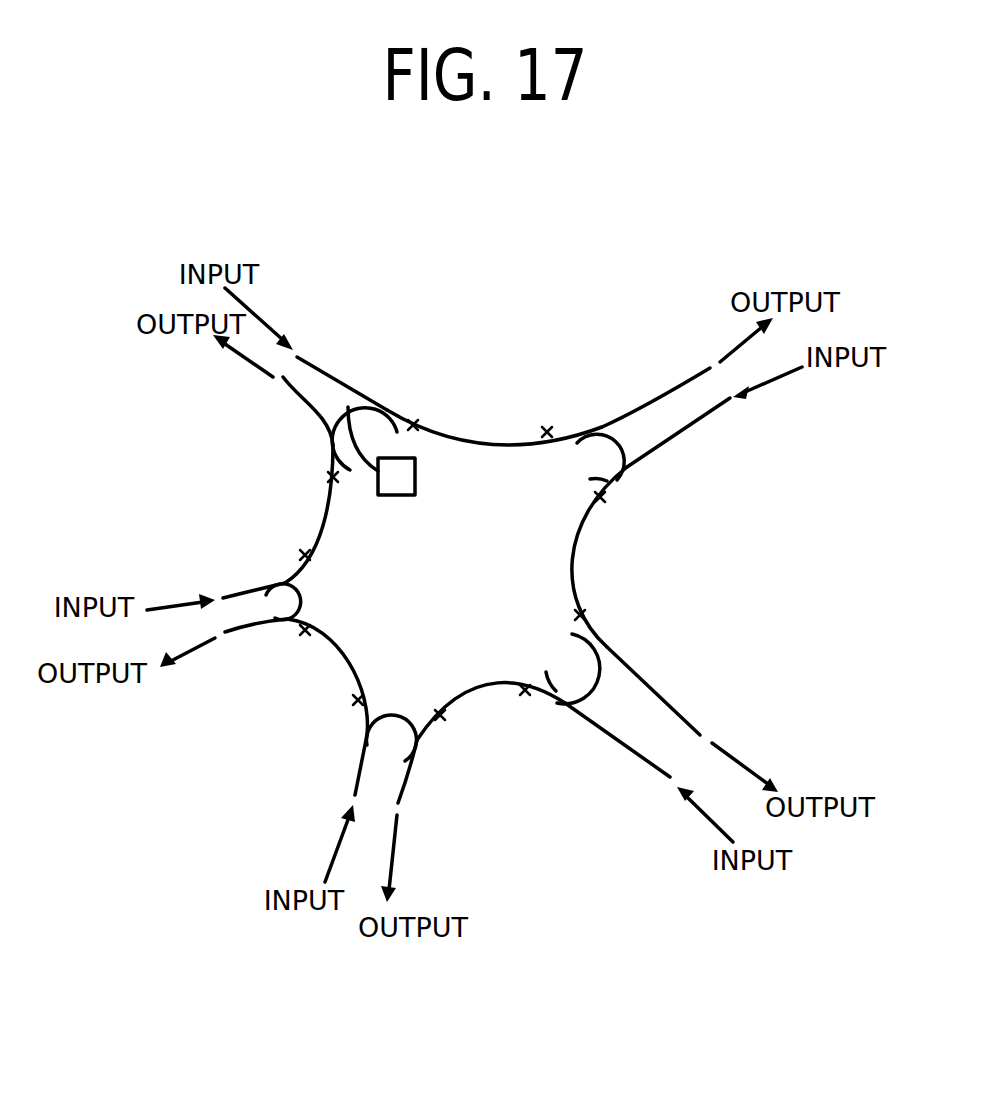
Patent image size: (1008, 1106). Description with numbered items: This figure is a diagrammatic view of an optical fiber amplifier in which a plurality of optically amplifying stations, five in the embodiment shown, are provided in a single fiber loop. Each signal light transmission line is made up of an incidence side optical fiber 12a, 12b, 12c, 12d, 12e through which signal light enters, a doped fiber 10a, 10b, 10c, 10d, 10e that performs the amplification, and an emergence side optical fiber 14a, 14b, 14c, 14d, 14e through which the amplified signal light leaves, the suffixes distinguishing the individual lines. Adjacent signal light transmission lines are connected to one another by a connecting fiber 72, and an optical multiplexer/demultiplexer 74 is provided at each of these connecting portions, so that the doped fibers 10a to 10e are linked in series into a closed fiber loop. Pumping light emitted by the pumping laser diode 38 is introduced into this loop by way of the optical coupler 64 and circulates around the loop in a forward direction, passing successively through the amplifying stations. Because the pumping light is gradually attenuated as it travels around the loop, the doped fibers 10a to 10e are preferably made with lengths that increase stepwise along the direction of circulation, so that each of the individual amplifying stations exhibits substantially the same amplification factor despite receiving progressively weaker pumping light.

The doped fiber 10a is at (479, 436).
The doped fiber 10b is at (576, 551).
The doped fiber 10c is at (499, 692).
The doped fiber 10d is at (338, 652).
The doped fiber 10e is at (330, 507).
The incidence side optical fiber 12a is at (311, 364).
The incidence side optical fiber 12b is at (698, 418).
The incidence side optical fiber 12c is at (634, 748).
The incidence side optical fiber 12d is at (357, 775).
The incidence side optical fiber 12e is at (238, 592).
The emergence side optical fiber 14a is at (660, 400).
The emergence side optical fiber 14b is at (665, 710).
The emergence side optical fiber 14c is at (408, 785).
The emergence side optical fiber 14d is at (237, 634).
The emergence side optical fiber 14e is at (297, 397).
The connecting fiber 72 is at (362, 405).
The optical multiplexer/demultiplexer 74 is at (390, 409).
The optical coupler 64 is at (349, 400).
The pumping laser diode 38 is at (414, 494).